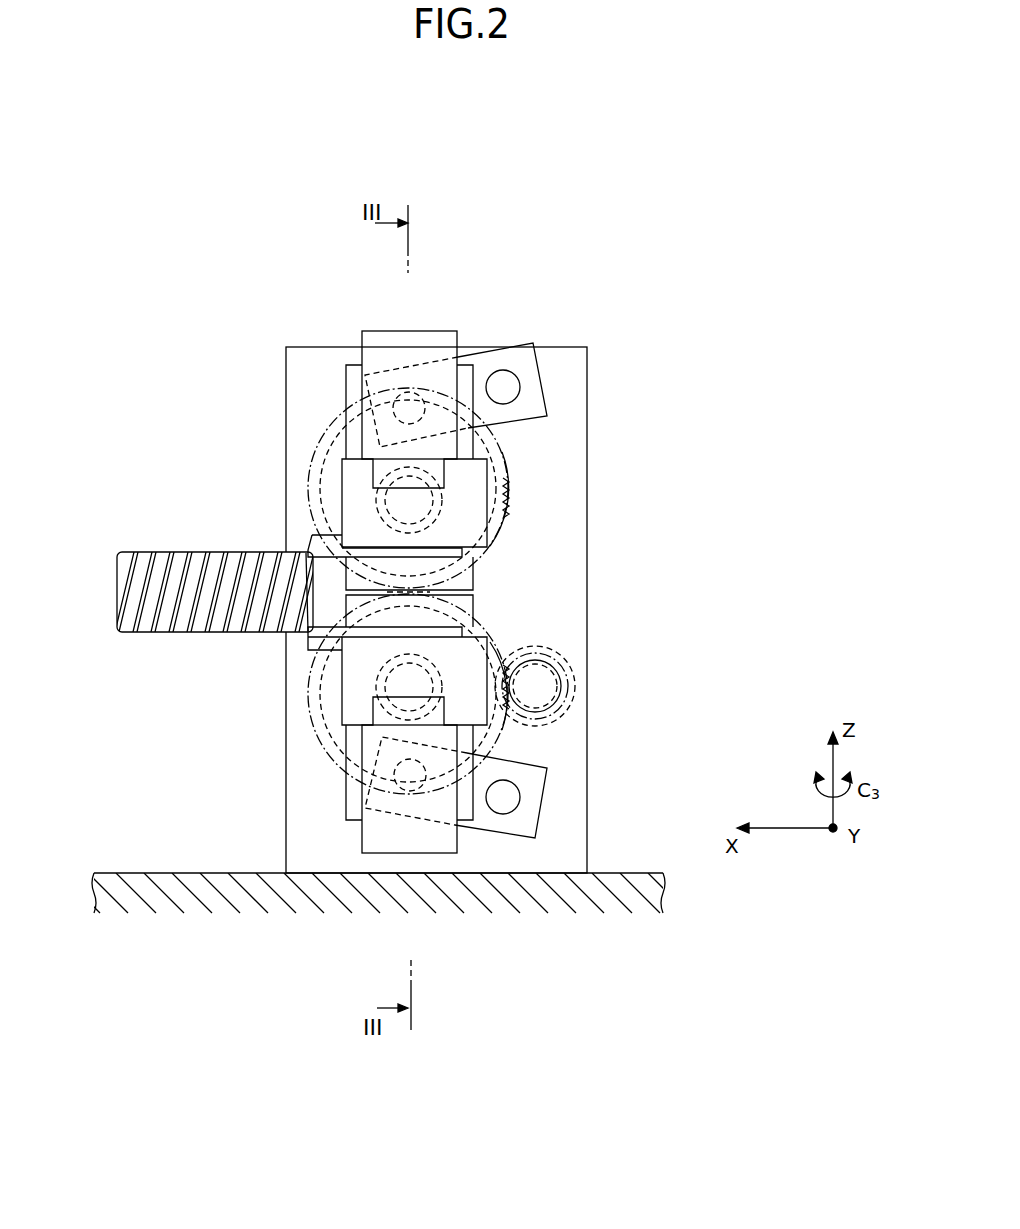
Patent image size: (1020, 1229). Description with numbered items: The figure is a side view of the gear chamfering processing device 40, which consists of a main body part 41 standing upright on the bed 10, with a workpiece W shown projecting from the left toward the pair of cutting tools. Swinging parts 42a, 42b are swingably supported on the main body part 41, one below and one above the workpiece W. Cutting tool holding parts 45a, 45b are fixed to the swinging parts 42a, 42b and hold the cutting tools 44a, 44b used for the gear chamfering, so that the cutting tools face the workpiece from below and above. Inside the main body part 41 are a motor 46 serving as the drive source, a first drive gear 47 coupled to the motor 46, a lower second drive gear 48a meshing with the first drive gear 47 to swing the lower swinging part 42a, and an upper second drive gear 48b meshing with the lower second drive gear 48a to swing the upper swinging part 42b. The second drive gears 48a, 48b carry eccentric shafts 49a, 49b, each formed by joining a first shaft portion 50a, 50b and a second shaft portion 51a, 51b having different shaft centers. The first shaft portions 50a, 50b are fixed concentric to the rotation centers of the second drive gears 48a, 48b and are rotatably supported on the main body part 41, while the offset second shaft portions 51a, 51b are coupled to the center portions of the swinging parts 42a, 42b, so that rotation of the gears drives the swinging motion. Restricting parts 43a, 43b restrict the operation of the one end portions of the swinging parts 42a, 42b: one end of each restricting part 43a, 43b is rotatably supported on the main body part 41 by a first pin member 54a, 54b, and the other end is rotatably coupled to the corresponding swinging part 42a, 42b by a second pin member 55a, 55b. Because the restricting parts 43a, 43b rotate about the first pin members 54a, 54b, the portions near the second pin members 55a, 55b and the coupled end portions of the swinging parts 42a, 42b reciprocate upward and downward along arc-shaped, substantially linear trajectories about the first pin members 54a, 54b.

The bed 10 is at (126, 873).
The gear chamfering processing device 40 is at (670, 292).
The main body part 41 is at (587, 487).
The lower swinging part 42a is at (346, 793).
The upper swinging part 42b is at (347, 390).
The lower restricting part 43a is at (547, 787).
The upper restricting part 43b is at (549, 372).
The lower cutting tool 44a is at (310, 640).
The upper cutting tool 44b is at (310, 545).
The lower cutting tool holding part 45a is at (342, 696).
The upper cutting tool holding part 45b is at (342, 482).
The motor 46 is at (572, 657).
The first drive gear 47 is at (559, 703).
The lower second drive gear 48a is at (497, 613).
The upper second drive gear 48b is at (510, 540).
The lower eccentric shaft 49a is at (552, 732).
The upper eccentric shaft 49b is at (553, 460).
The lower first shaft portion 50a is at (418, 725).
The upper first shaft portion 50b is at (420, 460).
The lower second shaft portion 51a is at (442, 687).
The upper second shaft portion 51b is at (432, 477).
The lower first pin member 54a is at (503, 814).
The upper first pin member 54b is at (503, 370).
The lower second pin member 55a is at (410, 791).
The upper second pin member 55b is at (409, 392).
The workpiece W is at (146, 552).